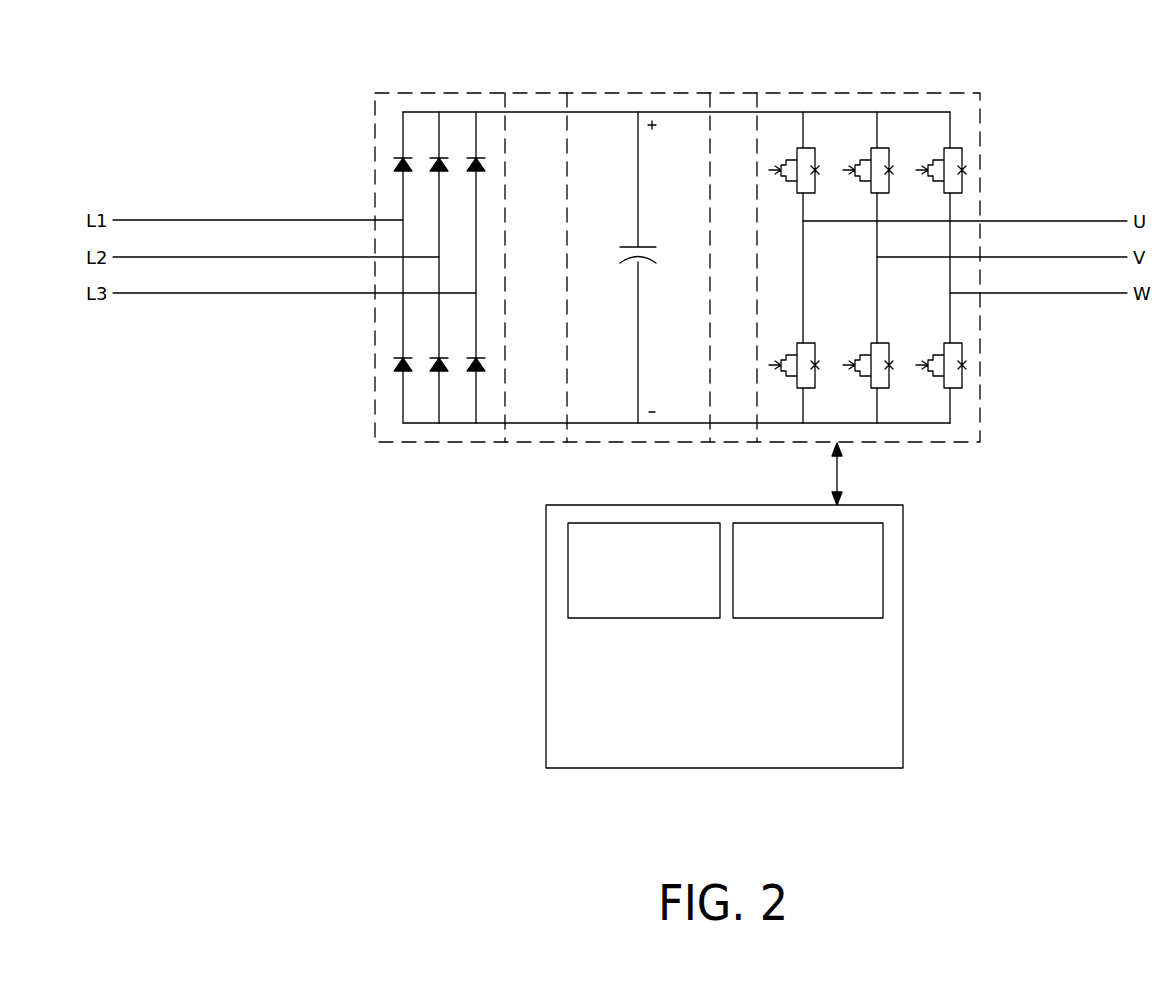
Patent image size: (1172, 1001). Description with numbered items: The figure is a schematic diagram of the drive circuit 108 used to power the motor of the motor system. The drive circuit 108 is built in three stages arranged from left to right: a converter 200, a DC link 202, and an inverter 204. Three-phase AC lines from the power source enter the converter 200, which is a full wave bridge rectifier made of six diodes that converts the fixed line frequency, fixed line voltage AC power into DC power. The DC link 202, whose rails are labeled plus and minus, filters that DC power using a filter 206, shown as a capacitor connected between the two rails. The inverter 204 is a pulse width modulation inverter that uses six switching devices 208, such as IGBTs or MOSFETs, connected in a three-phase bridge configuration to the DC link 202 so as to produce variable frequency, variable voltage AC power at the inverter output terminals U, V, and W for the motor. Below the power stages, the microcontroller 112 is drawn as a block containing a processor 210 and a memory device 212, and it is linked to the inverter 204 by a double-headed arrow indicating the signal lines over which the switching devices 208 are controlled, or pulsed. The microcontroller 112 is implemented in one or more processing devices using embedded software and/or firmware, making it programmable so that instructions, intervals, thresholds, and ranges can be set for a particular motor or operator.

The drive circuit 108 is at (978, 40).
The converter 200 is at (398, 94).
The DC link 202 is at (583, 94).
The inverter 204 is at (786, 94).
The filter 206 is at (646, 252).
The switching devices 208 is at (872, 147).
The processor 210 is at (652, 618).
The memory device 212 is at (812, 618).
The microcontroller 112 is at (724, 636).